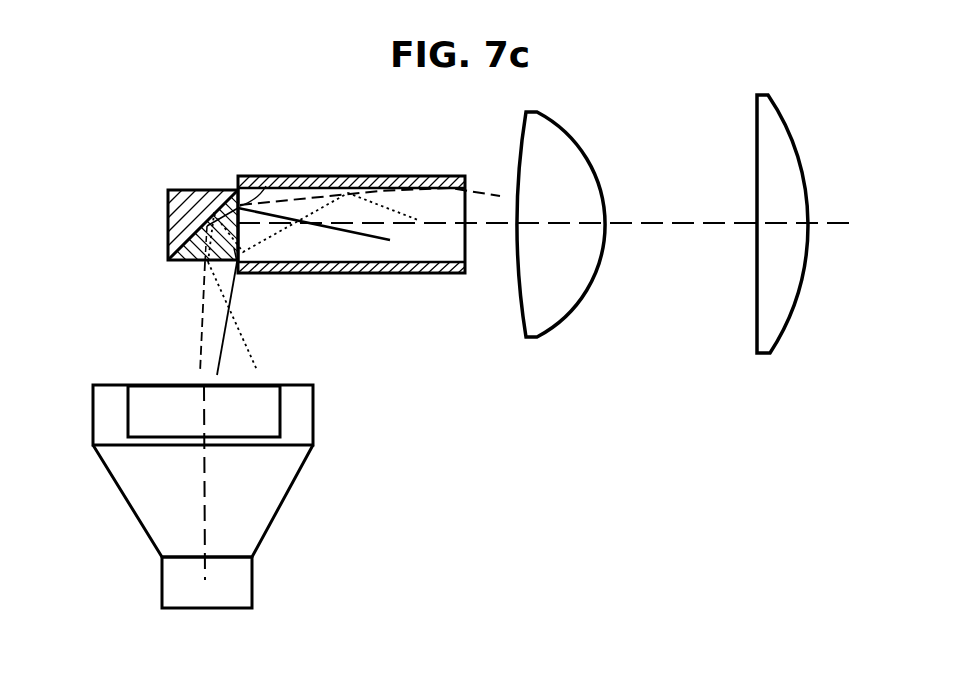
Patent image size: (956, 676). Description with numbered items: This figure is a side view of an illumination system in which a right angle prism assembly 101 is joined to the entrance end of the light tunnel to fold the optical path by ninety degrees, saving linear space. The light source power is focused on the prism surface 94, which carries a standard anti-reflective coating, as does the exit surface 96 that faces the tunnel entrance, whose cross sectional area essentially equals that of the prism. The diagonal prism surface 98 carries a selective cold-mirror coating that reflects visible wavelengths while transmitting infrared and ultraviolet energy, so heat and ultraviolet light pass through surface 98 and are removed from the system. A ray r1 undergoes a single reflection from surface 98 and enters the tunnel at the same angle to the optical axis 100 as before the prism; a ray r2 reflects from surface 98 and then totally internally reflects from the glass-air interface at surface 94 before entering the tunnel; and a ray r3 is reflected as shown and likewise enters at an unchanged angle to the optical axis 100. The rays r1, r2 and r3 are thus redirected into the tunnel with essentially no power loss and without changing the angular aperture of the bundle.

The optical head assembly 101 is at (271, 213).
The prism surface 94 is at (185, 262).
The prism surface 98 is at (221, 190).
The prism surface 96 is at (264, 194).
The optical axis 100 is at (617, 223).
The ray r1 is at (196, 370).
The ray r2 is at (254, 368).
The ray r3 is at (232, 292).